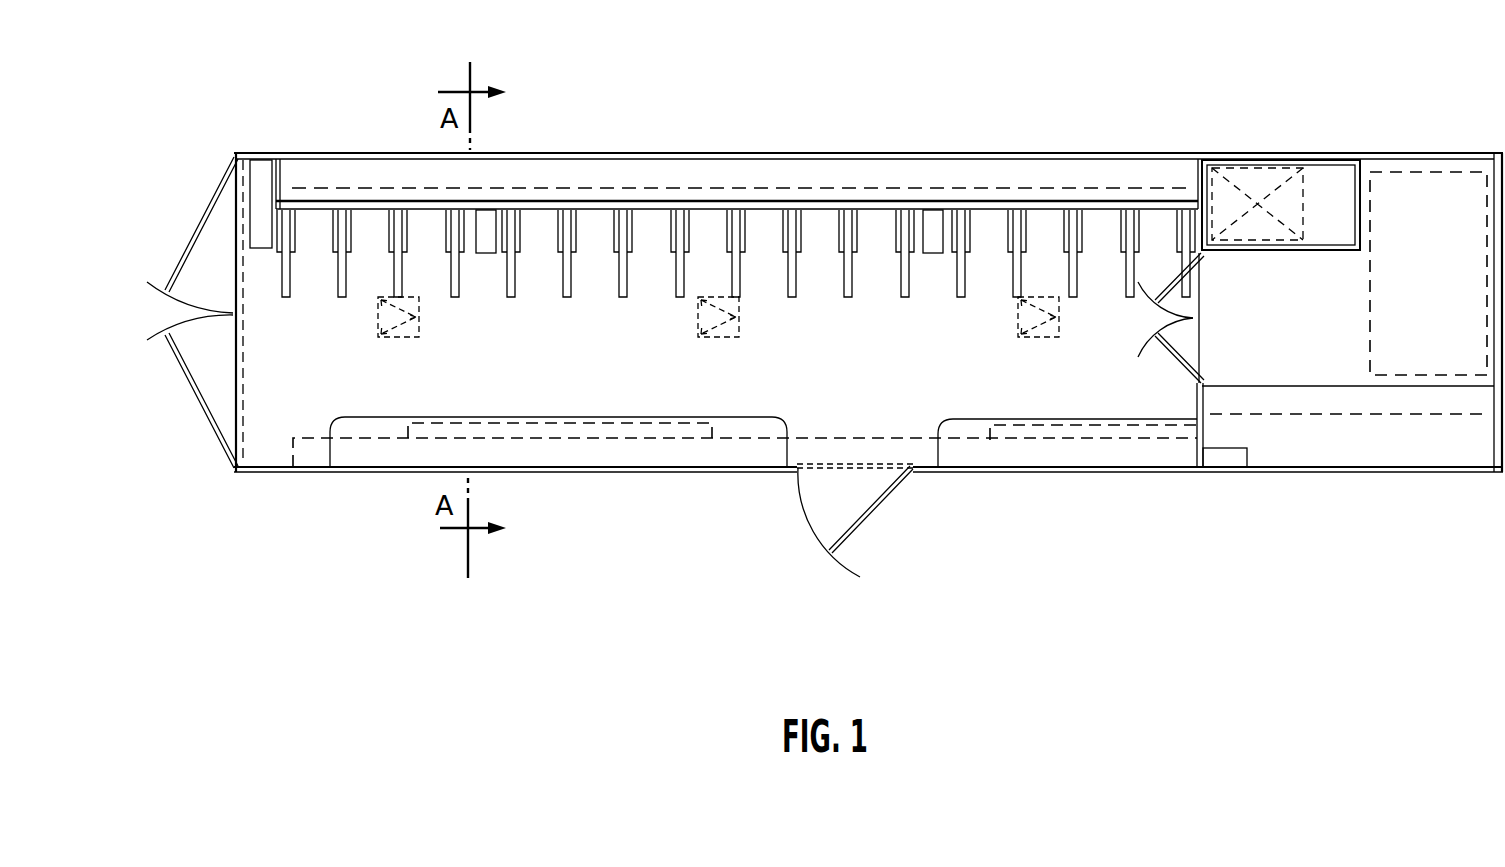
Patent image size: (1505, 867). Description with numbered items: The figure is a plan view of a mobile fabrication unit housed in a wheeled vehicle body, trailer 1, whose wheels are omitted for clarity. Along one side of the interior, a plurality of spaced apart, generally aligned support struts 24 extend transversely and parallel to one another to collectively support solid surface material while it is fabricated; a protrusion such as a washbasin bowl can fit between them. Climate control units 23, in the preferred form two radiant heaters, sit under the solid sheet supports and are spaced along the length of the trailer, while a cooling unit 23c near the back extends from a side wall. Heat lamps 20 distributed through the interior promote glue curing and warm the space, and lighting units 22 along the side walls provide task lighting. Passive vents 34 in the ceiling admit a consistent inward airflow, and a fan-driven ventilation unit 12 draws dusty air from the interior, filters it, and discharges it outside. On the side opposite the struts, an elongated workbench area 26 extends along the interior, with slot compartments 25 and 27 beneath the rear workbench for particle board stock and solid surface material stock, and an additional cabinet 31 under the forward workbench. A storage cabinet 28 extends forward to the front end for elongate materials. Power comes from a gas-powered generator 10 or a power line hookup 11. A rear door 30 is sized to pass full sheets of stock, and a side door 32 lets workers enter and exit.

The trailer 1 is at (661, 84).
The gas-powered generator 10 is at (1370, 300).
The power line hookup 11 is at (1218, 460).
The ventilation unit 12 is at (1253, 184).
The heat lamps 20 is at (728, 153).
The lighting units 22 is at (290, 442).
The climate control units 23 is at (488, 254).
The cooling unit 23c is at (254, 250).
The support struts 24 is at (304, 252).
The slot compartment 25 is at (618, 453).
The workbench area 26 is at (376, 466).
The slot compartment 27 is at (684, 428).
The storage cabinet 28 is at (1263, 448).
The door 30 is at (197, 240).
The cabinet 31 is at (988, 460).
The door 32 is at (876, 512).
The passive vents 34 is at (396, 338).